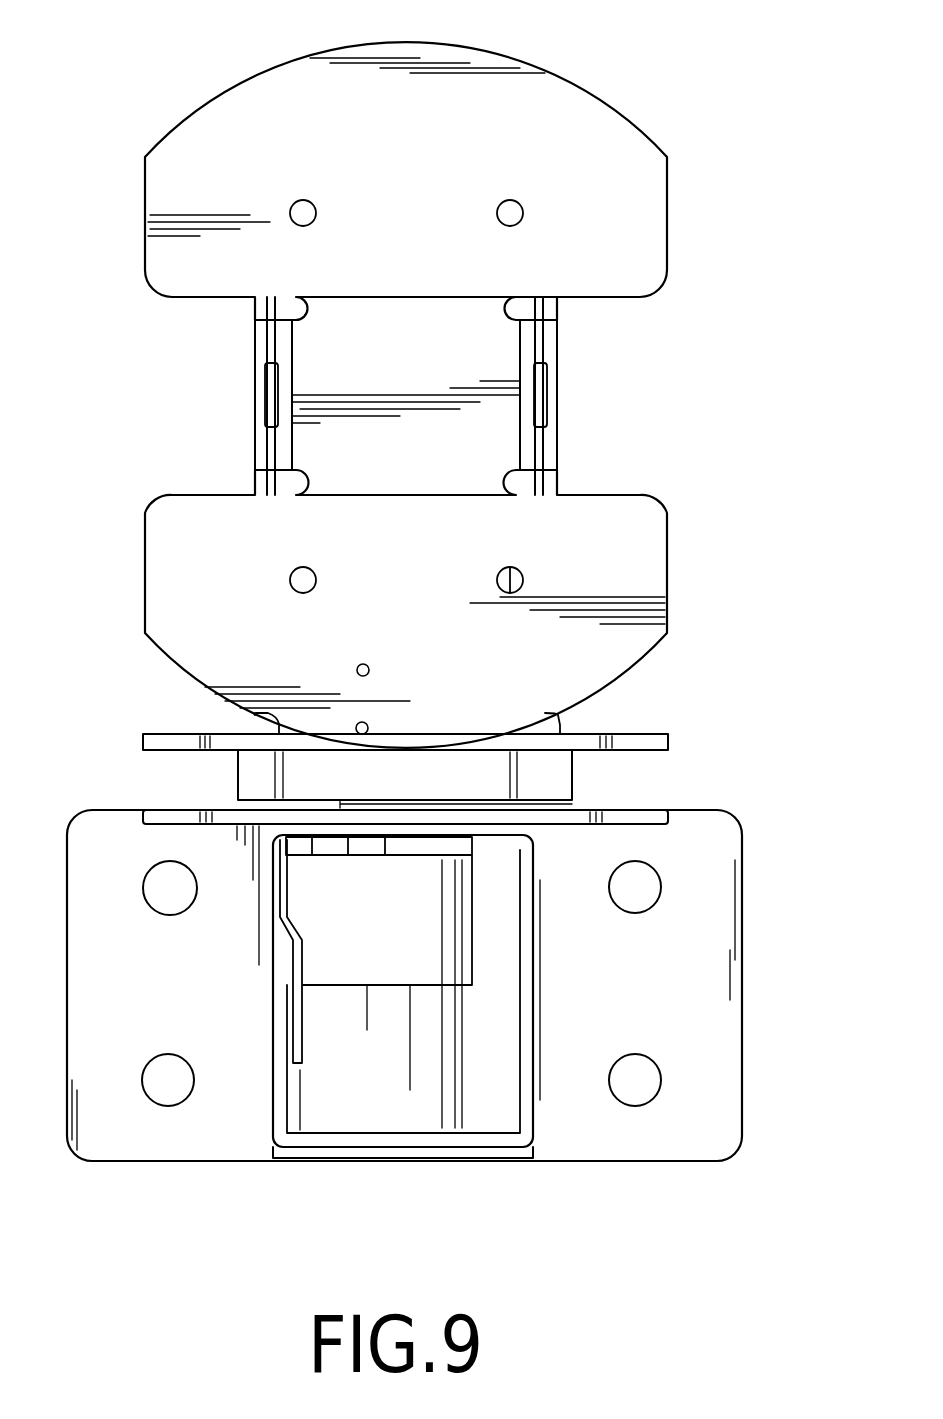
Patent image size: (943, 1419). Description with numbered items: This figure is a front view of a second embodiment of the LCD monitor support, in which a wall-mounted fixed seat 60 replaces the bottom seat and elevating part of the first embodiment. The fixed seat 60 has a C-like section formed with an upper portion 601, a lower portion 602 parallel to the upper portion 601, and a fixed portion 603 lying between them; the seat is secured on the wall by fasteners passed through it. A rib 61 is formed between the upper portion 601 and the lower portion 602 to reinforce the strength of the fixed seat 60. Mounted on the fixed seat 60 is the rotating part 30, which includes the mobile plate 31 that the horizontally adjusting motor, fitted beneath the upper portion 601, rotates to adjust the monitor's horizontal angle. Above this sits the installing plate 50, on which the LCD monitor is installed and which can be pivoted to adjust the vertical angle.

The rotating part 30 is at (113, 759).
The mobile plate 31 is at (668, 738).
The installing plate 50 is at (660, 213).
The fixed seat 60 is at (735, 877).
The upper portion 601 is at (660, 808).
The lower portion 602 is at (517, 1154).
The fixed portion 603 is at (650, 1082).
The rib 61 is at (528, 975).